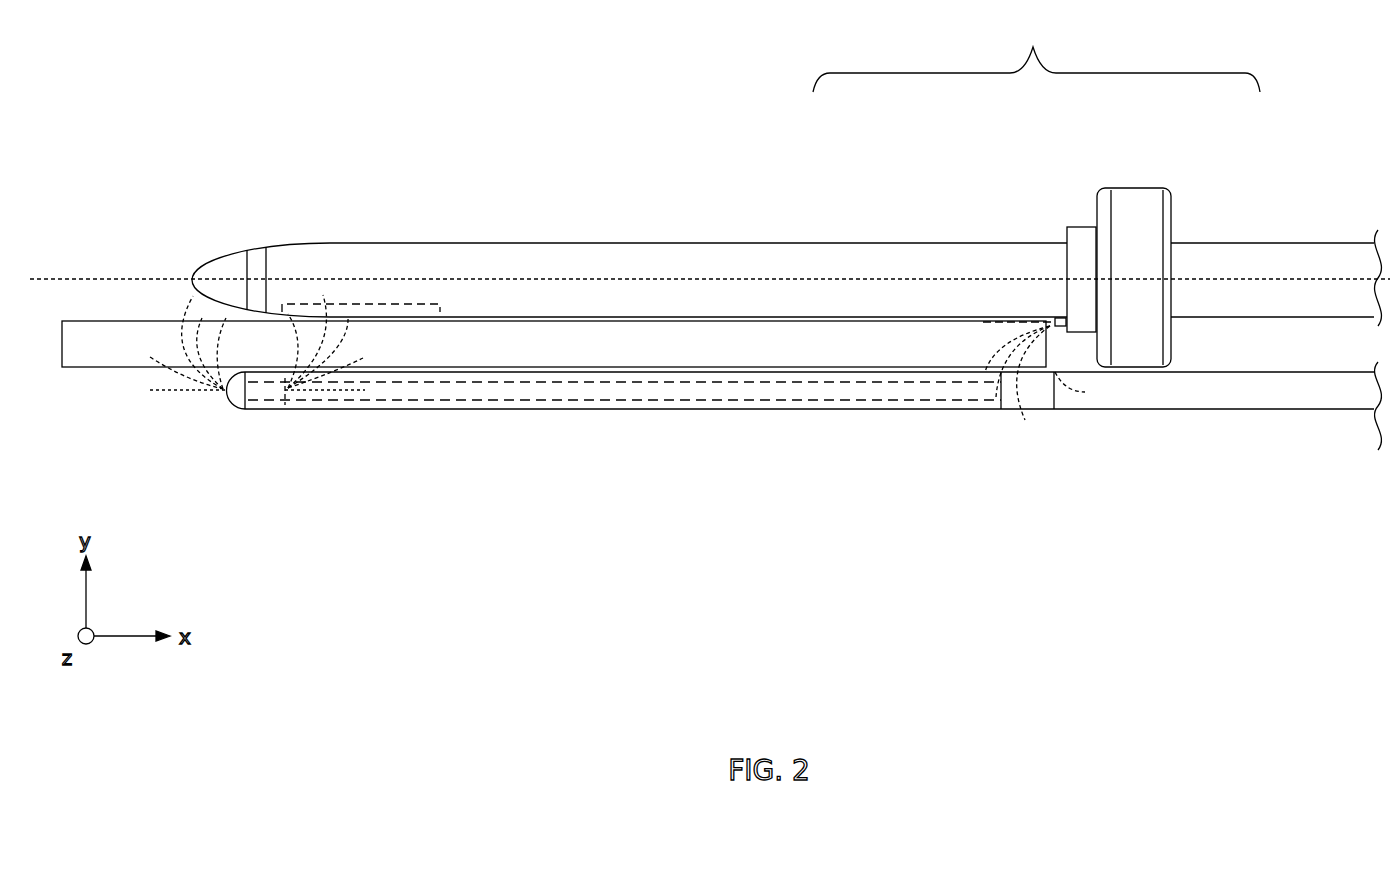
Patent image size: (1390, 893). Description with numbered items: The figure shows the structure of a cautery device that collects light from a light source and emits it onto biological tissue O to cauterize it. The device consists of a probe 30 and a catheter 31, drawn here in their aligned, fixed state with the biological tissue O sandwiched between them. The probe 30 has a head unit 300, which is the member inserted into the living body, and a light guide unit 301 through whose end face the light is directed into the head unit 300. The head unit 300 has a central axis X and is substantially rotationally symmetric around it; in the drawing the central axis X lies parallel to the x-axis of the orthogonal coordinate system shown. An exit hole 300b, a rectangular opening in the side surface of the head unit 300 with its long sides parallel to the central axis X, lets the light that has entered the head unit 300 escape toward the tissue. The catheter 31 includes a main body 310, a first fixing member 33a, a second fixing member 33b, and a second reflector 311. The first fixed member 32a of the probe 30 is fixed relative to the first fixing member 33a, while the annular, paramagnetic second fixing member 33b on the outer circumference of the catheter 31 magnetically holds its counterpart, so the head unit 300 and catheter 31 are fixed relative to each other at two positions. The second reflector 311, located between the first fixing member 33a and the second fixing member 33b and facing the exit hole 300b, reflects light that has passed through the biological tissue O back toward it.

The probe 30 is at (1036, 56).
The head unit 300 is at (841, 202).
The exit hole 300b is at (392, 308).
The light guide unit 301 is at (1228, 262).
The first fixed member 32a is at (255, 253).
The first fixing member 33a is at (1062, 320).
The second fixing member 33b is at (1037, 400).
The catheter 31 is at (765, 439).
The main body 310 is at (824, 411).
The second reflector 311 is at (607, 393).
The central axis X is at (78, 276).
The biological tissue O is at (95, 367).